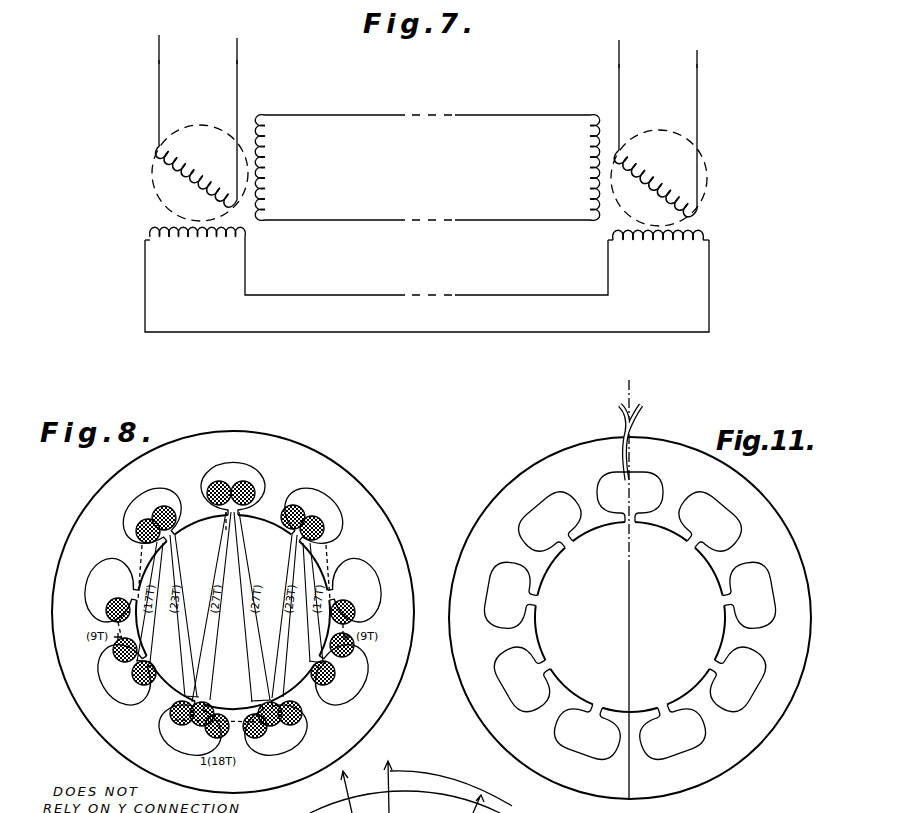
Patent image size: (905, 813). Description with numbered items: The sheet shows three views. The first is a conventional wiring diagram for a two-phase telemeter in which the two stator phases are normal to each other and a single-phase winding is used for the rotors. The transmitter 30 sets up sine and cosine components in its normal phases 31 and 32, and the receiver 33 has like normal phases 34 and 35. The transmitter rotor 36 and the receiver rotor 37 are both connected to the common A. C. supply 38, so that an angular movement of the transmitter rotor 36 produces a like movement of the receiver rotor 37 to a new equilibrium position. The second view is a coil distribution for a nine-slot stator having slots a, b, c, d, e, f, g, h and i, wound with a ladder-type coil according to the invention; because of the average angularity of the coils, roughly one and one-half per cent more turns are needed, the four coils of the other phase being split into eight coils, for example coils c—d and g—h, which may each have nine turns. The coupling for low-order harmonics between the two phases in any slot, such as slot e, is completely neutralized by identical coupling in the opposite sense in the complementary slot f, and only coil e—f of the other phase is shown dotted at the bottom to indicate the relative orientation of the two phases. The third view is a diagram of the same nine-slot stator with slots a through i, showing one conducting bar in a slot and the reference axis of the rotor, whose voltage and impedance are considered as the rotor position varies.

In FIG. 7, the transmitter 30 is at (126, 314).
In FIG. 7, the normal phase 31 is at (192, 243).
In FIG. 7, the normal phase 32 is at (272, 172).
In FIG. 7, the receiver 33 is at (740, 350).
In FIG. 7, the normal phase 34 is at (657, 246).
In FIG. 7, the normal phase 35 is at (586, 176).
In FIG. 7, the transmitter rotor 36 is at (195, 168).
In FIG. 7, the receiver rotor 37 is at (656, 182).
In FIG. 7, the common A. C. supply 38 is at (236, 62).
In FIG. 8, the stator slot a is at (233, 474).
In FIG. 11, the stator slot a is at (630, 485).
In FIG. 8, the stator slot b is at (153, 513).
In FIG. 11, the stator slot b is at (553, 524).
In FIG. 8, the stator slot c is at (103, 590).
In FIG. 11, the stator slot c is at (502, 596).
In FIG. 8, the stator slot d is at (125, 674).
In FIG. 11, the stator slot d is at (521, 677).
In FIG. 8, the stator slot e is at (191, 733).
In FIG. 11, the stator slot e is at (588, 739).
In FIG. 8, the stator slot f is at (275, 733).
In FIG. 11, the stator slot f is at (670, 739).
In FIG. 8, the stator slot g is at (340, 674).
In FIG. 11, the stator slot g is at (734, 677).
In FIG. 8, the stator slot h is at (360, 590).
In FIG. 11, the stator slot h is at (755, 596).
In FIG. 8, the stator slot i is at (312, 518).
In FIG. 11, the stator slot i is at (707, 525).